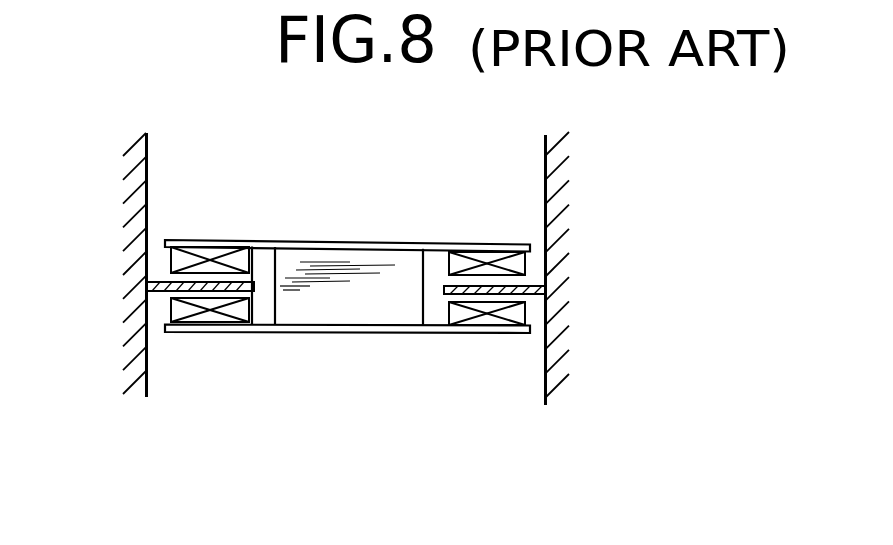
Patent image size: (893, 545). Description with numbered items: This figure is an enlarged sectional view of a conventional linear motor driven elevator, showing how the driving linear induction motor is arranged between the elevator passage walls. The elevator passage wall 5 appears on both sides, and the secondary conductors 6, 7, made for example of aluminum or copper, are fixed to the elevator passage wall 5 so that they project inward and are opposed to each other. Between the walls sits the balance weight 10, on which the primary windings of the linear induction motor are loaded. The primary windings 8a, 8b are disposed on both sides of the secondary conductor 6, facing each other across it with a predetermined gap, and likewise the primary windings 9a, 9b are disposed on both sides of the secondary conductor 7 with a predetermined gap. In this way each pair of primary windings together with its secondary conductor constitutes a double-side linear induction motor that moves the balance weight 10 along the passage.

The elevator passage wall 5 is at (145, 178).
The secondary conductor 6 is at (530, 286).
The secondary conductor 7 is at (150, 282).
The primary winding 8a is at (464, 258).
The primary winding 8b is at (457, 316).
The primary winding 9a is at (195, 258).
The primary winding 9b is at (165, 308).
The balance weight 10 is at (362, 256).